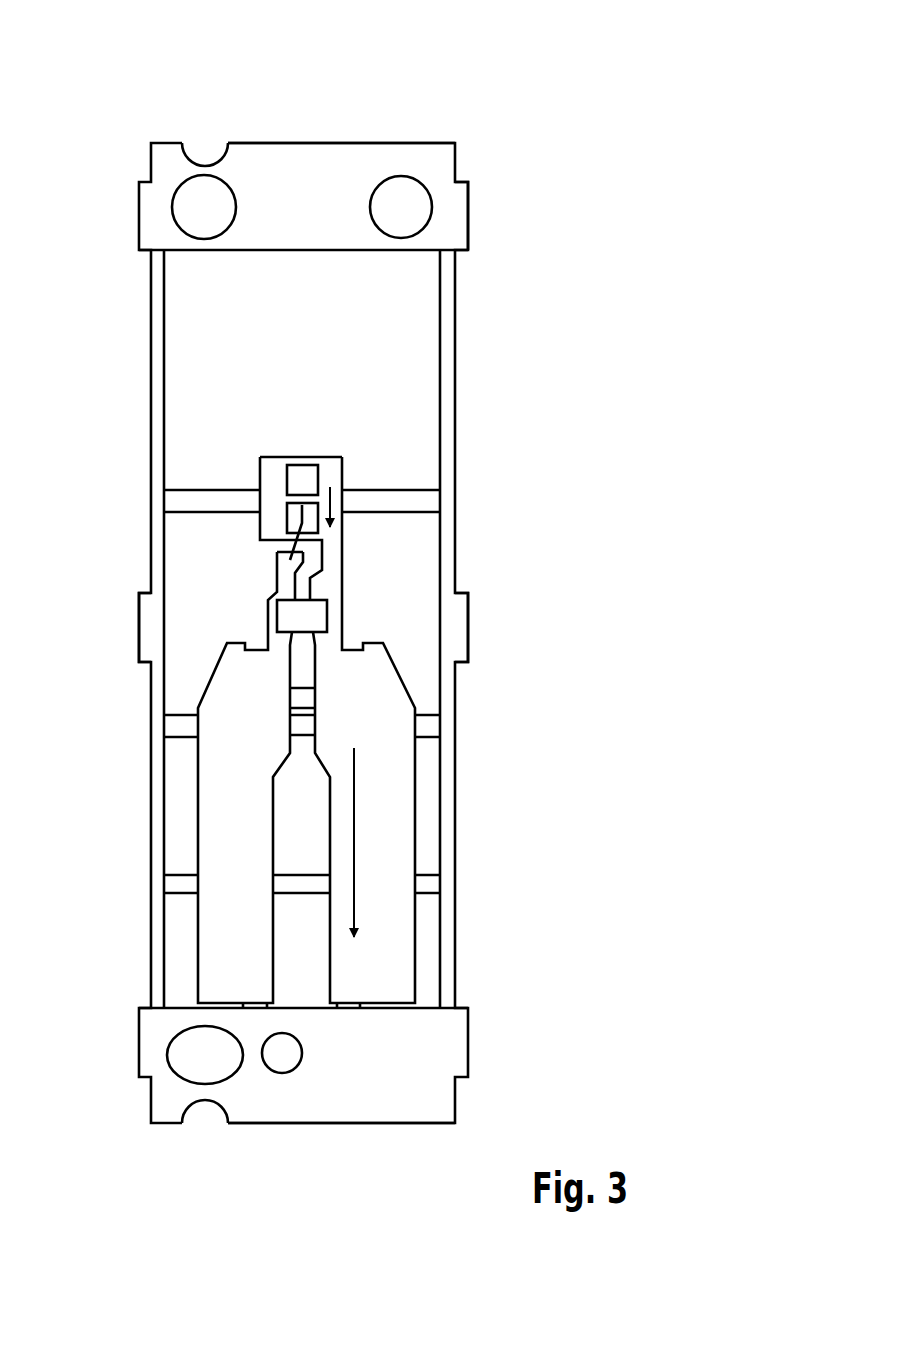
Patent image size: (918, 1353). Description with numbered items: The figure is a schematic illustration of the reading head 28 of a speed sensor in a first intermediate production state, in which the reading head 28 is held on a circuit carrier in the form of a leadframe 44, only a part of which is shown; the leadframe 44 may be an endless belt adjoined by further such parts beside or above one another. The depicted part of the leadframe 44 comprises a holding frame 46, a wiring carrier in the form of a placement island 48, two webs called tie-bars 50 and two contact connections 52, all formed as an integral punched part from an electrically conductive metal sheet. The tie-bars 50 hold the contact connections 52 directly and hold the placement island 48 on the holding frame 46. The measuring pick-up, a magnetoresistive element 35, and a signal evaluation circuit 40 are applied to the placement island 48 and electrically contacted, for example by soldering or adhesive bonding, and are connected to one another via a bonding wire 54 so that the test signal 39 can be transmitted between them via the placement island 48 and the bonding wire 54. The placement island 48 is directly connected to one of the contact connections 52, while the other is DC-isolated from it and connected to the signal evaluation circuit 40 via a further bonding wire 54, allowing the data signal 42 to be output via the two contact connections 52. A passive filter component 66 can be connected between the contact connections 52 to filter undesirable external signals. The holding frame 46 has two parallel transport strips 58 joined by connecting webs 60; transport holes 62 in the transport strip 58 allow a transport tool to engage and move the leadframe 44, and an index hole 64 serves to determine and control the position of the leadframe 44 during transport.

The reading head 28 is at (505, 118).
The magnetoresistive element 35 is at (302, 490).
The test signal 39 is at (358, 490).
The signal evaluation circuit 40 is at (310, 525).
The data signal 42 is at (356, 782).
The leadframe 44 is at (132, 133).
The holding frame 46 is at (453, 210).
The placement island 48 is at (272, 527).
The tie-bars 50 is at (195, 490).
The contact connections 52 is at (220, 822).
The bonding wire 54 is at (283, 490).
The transport strips 58 is at (303, 155).
The connecting webs 60 is at (155, 688).
The transport holes 62 is at (204, 190).
The index hole 64 is at (282, 1063).
The passive filter component 66 is at (310, 617).